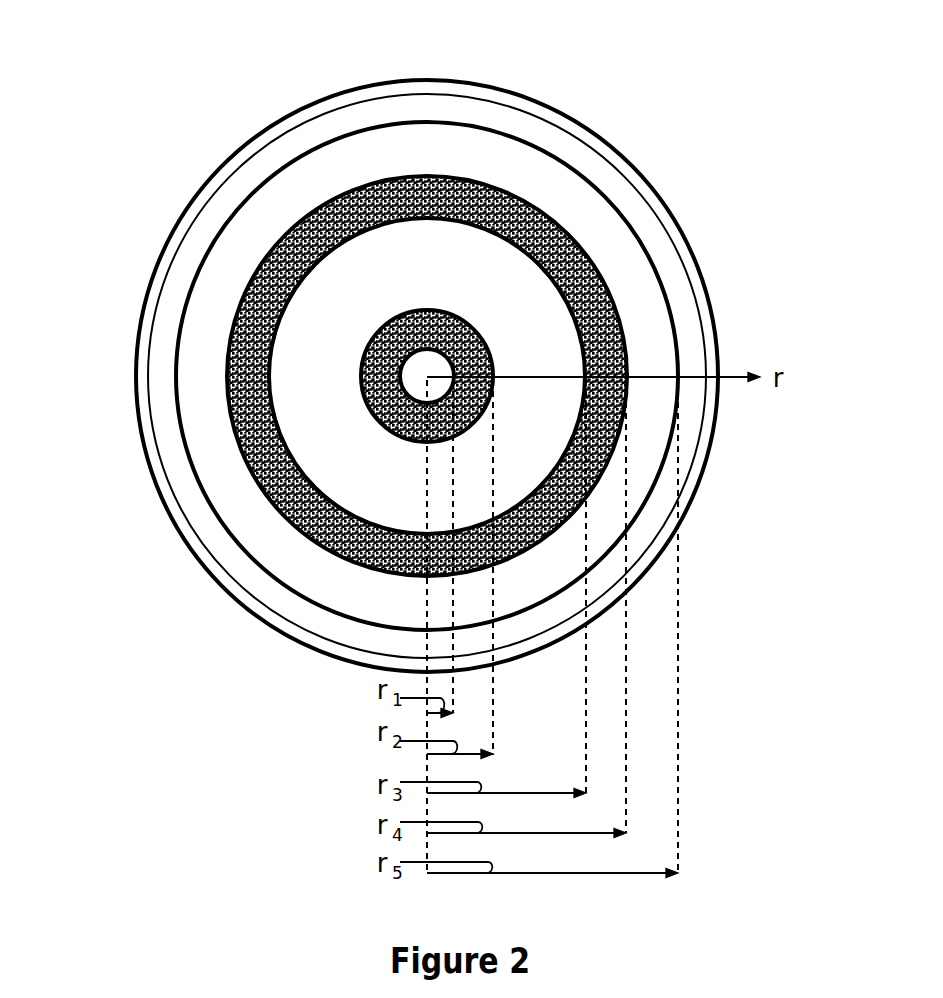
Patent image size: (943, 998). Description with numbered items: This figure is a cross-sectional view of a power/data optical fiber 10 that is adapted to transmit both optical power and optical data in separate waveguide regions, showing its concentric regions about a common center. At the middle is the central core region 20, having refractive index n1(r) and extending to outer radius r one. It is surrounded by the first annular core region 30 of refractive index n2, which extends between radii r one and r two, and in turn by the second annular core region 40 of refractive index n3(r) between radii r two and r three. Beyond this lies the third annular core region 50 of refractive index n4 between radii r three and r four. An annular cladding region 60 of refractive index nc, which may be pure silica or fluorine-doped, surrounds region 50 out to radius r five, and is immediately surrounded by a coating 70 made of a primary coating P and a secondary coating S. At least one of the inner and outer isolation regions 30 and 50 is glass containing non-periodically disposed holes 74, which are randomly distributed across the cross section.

The optical fiber 10 is at (200, 60).
The central core region 20 is at (428, 358).
The first annular core region 30 is at (447, 307).
The second annular core region 40 is at (455, 255).
The third annular core region 50 is at (487, 193).
The annular cladding region 60 is at (495, 160).
The coating 70 is at (228, 200).
The non-periodically disposed holes 74 is at (376, 388).